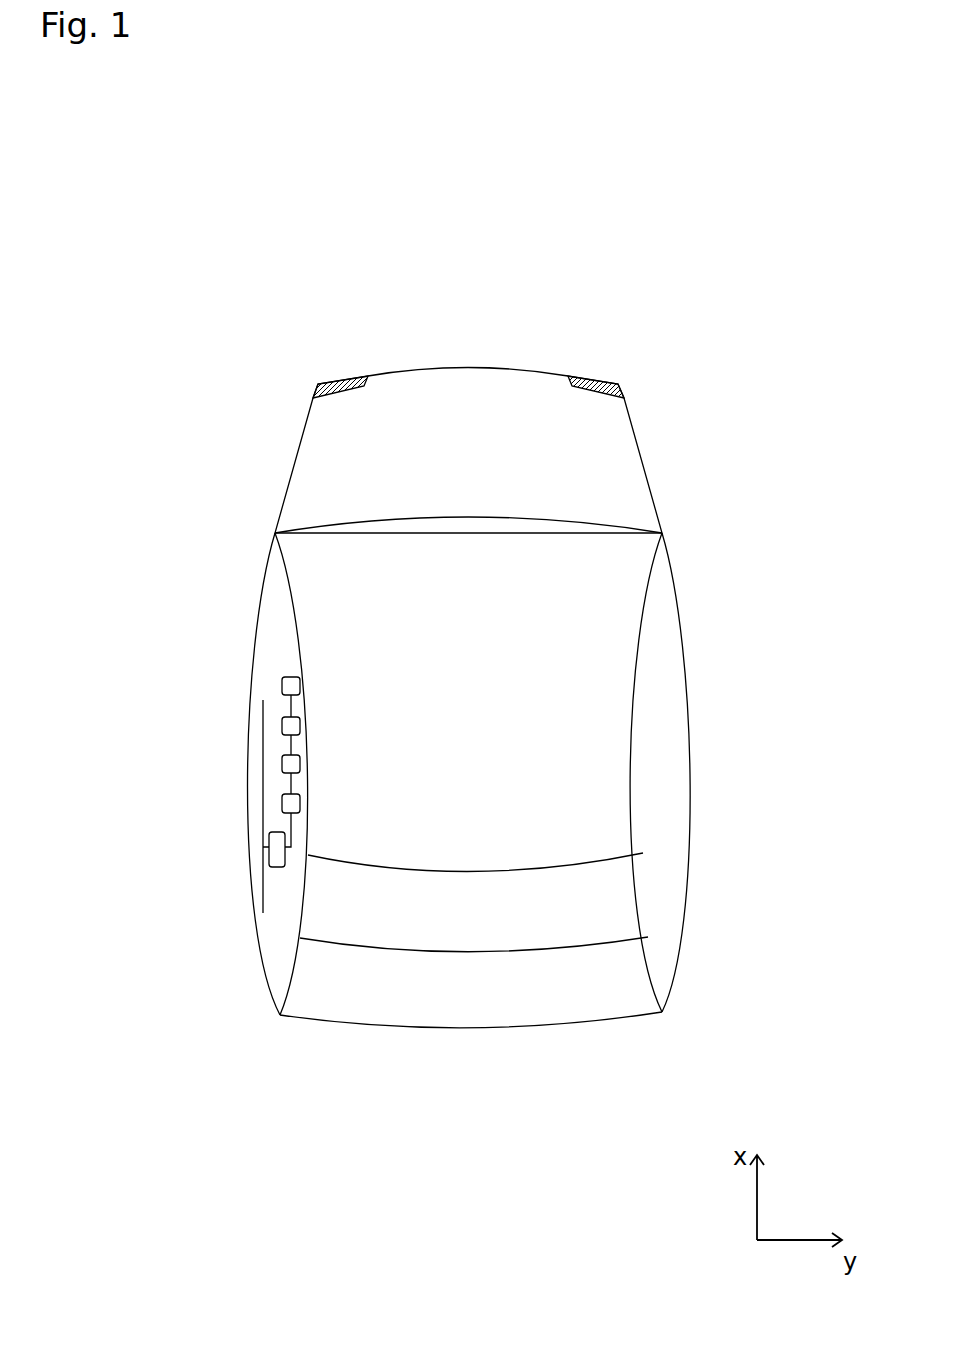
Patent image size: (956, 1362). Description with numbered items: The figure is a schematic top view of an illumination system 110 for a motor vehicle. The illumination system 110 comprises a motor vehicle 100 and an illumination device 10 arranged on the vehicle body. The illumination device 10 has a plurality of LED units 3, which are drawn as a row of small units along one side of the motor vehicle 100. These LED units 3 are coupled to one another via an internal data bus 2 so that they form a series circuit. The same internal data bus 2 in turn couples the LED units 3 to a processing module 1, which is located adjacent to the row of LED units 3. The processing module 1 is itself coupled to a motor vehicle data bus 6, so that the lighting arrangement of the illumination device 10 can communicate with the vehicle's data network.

The illumination system 110 is at (232, 238).
The motor vehicle 100 is at (706, 416).
The illumination device 10 is at (195, 596).
The LED units 3 is at (282, 684).
The internal data bus 2 is at (291, 830).
The motor vehicle data bus 6 is at (263, 795).
The processing module 1 is at (277, 865).